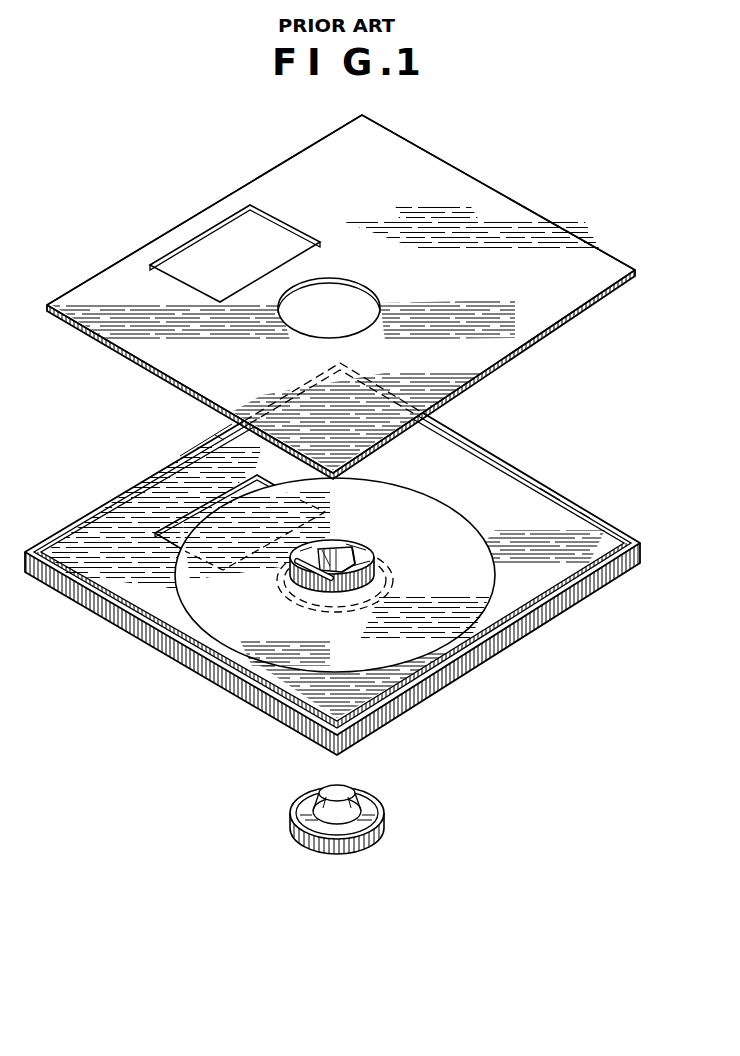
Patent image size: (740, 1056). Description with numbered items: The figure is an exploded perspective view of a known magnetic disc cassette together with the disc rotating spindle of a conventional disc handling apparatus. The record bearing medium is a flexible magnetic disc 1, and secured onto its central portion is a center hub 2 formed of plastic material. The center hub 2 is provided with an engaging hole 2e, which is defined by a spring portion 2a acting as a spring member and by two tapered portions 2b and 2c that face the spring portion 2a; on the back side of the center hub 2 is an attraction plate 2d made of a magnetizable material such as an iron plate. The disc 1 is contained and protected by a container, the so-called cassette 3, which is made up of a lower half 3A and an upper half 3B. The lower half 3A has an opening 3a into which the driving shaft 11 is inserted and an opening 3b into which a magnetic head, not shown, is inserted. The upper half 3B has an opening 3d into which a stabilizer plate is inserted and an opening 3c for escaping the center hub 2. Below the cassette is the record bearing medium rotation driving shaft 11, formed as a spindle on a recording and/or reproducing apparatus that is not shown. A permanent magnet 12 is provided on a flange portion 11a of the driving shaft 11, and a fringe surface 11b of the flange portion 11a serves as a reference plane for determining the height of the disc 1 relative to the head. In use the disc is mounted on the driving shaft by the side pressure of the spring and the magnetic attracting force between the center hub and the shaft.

The flexible magnetic disc 1 is at (448, 522).
The center hub 2 is at (345, 578).
The spring portion 2a is at (320, 580).
The tapered portion 2b is at (374, 533).
The tapered portion 2c is at (357, 555).
The attraction plate 2d is at (360, 610).
The engaging hole 2e is at (342, 560).
The cassette 3 is at (332, 435).
The lower half of the cassette 3A is at (332, 559).
The upper half of the cassette 3B is at (341, 297).
The opening for the driving shaft 3a is at (273, 583).
The opening for the magnetic head 3b is at (178, 540).
The opening for escaping the center hub 3c is at (357, 293).
The opening for the stabilizer plate 3d is at (212, 228).
The driving shaft 11 is at (337, 845).
The flange portion 11a is at (356, 846).
The fringe surface 11b is at (290, 812).
The permanent magnet 12 is at (380, 812).